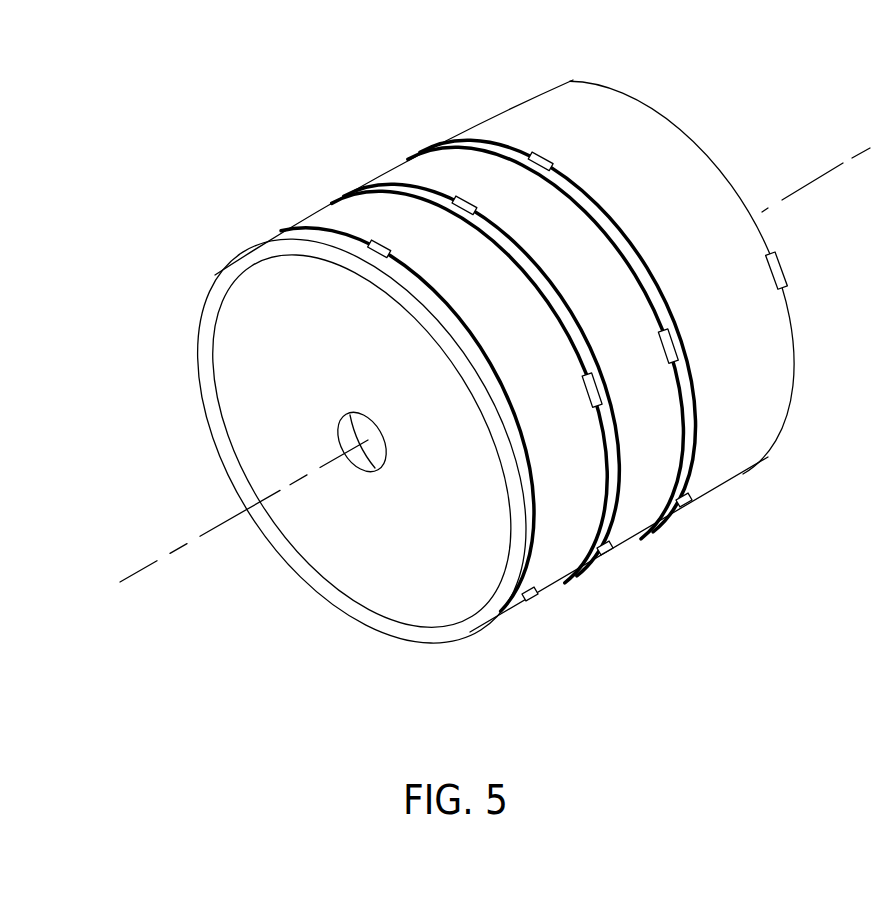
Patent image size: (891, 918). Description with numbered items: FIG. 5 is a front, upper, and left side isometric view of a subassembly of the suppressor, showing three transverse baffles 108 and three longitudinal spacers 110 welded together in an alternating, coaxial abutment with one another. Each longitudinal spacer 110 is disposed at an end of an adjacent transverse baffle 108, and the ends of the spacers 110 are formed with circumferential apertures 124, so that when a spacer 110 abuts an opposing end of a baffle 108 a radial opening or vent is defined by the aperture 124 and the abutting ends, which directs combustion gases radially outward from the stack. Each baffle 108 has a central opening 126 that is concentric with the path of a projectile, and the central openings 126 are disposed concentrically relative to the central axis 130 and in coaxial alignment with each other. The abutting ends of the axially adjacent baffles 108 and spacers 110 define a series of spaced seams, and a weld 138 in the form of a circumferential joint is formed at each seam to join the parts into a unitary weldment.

The transverse baffle 108 is at (436, 367).
The longitudinal spacer 110 is at (552, 570).
The circumferential aperture 124 is at (398, 252).
The central opening 126 is at (361, 474).
The central axis 130 is at (144, 571).
The weld 138 is at (440, 142).